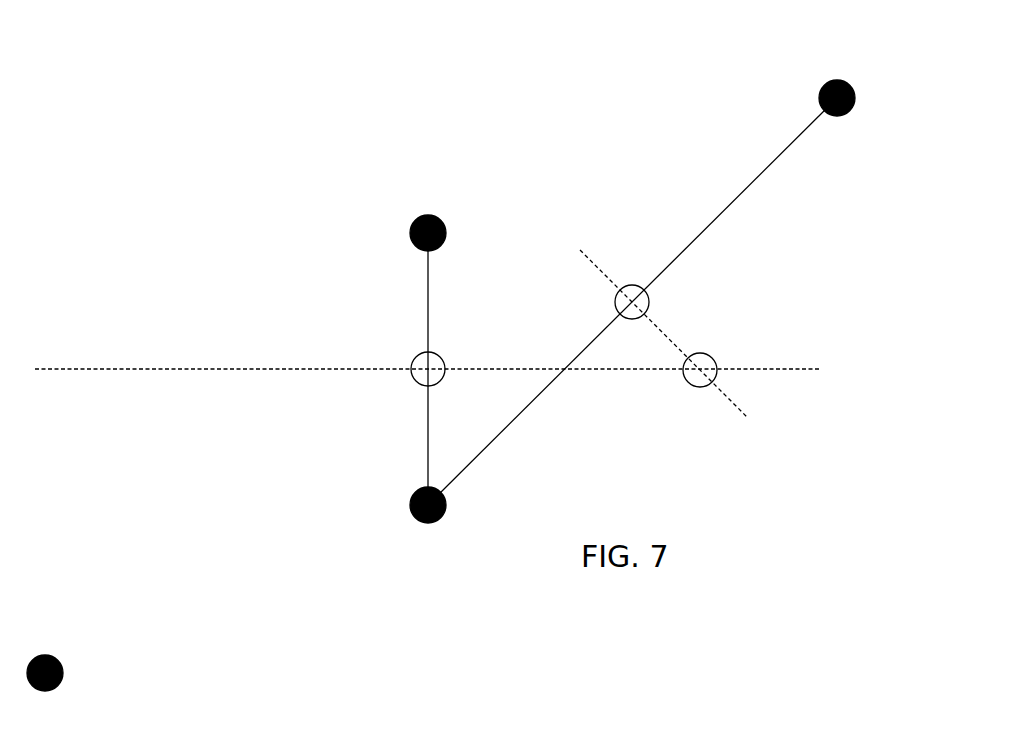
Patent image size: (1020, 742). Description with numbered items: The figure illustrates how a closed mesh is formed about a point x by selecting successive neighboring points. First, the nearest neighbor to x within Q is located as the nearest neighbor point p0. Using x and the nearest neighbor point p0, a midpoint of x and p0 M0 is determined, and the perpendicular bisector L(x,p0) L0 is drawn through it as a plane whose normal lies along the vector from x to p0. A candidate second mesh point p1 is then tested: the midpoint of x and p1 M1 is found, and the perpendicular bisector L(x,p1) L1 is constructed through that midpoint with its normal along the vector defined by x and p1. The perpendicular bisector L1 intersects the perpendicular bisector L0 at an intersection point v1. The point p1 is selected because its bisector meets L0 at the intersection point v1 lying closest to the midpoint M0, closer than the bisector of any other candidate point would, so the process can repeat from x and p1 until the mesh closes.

The nearest neighbor point p0 is at (419, 250).
The second mesh point p1 is at (815, 98).
The point x is at (416, 505).
The intersection point v1 is at (708, 358).
The midpoint of x and p0 M0 is at (379, 394).
The midpoint of x and p1 M1 is at (624, 257).
The perpendicular bisector L(x,p0) L0 is at (468, 367).
The perpendicular bisector L(x,p1) L1 is at (666, 335).